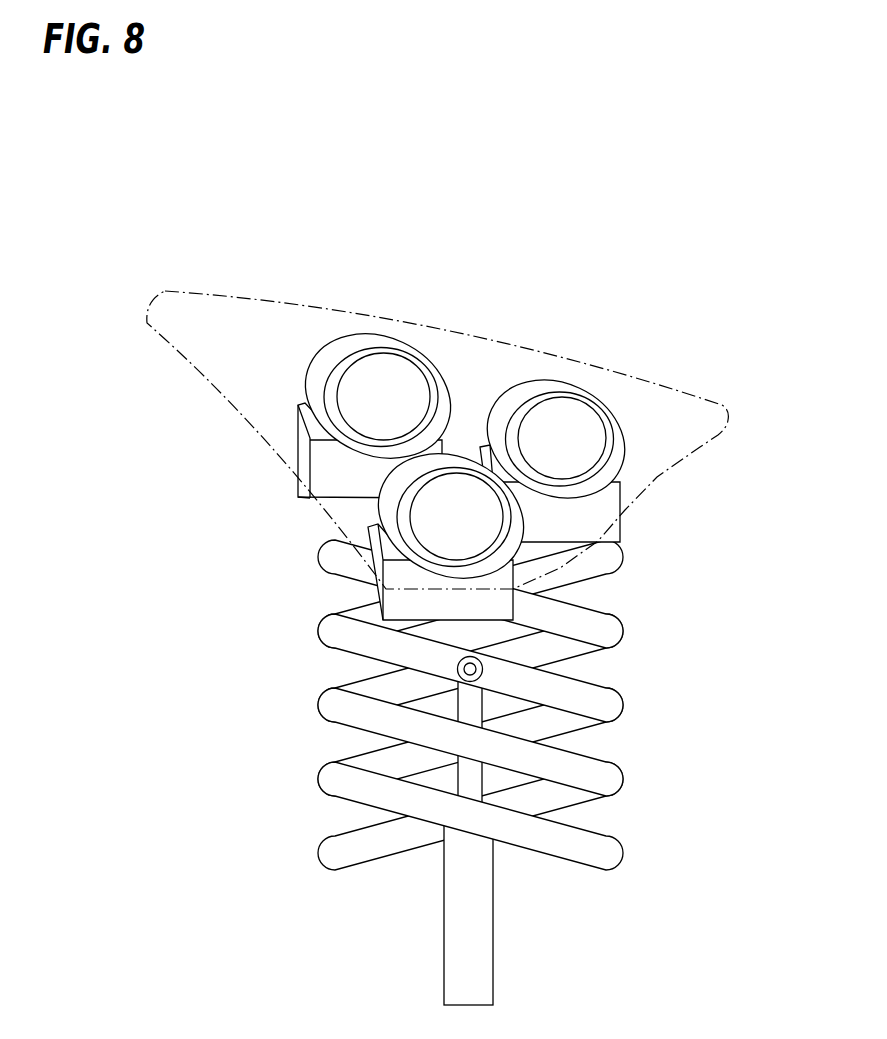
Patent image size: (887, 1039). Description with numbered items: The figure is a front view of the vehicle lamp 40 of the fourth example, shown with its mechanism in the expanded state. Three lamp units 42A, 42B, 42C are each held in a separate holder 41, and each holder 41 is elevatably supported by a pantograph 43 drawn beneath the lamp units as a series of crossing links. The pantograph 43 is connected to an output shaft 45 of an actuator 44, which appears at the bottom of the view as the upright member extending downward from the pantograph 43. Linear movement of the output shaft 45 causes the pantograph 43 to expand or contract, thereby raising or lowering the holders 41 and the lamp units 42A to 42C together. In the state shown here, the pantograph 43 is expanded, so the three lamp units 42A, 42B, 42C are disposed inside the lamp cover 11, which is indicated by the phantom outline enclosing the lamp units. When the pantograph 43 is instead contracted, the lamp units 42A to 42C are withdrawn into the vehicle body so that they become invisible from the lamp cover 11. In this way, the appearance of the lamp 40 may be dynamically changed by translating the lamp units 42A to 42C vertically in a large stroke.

The lamp cover 11 is at (231, 298).
The vehicle lamp 40 is at (435, 596).
The holder 41 is at (297, 456).
The lamp unit 42A is at (407, 342).
The lamp unit 42B is at (590, 378).
The lamp unit 42C is at (453, 453).
The pantograph 43 is at (318, 708).
The actuator 44 is at (493, 951).
The output shaft 45 is at (474, 703).